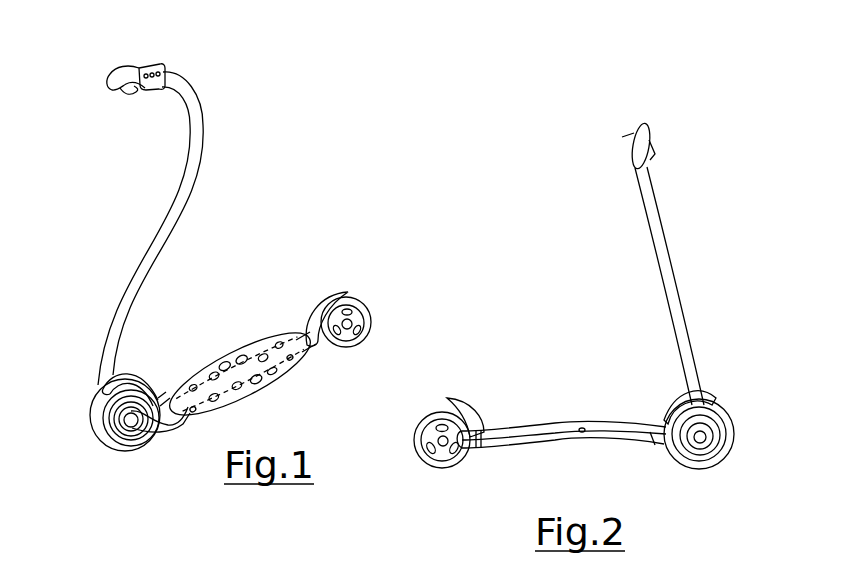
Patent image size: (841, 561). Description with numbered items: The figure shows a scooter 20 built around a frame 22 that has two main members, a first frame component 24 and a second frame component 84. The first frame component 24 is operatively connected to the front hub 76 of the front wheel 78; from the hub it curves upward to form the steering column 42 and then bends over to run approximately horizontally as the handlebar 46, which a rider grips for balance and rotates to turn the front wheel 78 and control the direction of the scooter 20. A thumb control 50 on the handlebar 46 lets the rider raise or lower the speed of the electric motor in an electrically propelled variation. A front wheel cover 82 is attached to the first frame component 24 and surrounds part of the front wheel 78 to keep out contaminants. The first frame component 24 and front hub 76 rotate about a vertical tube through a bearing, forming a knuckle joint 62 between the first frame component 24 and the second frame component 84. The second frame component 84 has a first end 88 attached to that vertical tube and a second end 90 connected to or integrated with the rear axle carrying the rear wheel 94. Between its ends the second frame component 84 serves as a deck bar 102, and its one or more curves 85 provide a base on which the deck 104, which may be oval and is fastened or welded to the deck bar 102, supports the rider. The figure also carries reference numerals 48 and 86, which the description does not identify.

In FIG. 1, the scooter 20 is at (280, 77).
In FIG. 2, the scooter 20 is at (701, 155).
In FIG. 1, the frame 22 is at (201, 228).
In FIG. 2, the frame 22 is at (679, 286).
In FIG. 1, the first frame component 24 is at (150, 228).
In FIG. 2, the first frame component 24 is at (666, 286).
In FIG. 1, the steering column 42 is at (178, 203).
In FIG. 2, the steering column 42 is at (666, 275).
In FIG. 1, the handlebar 46 is at (166, 86).
In FIG. 2, the handlebar 46 is at (636, 150).
In FIG. 1, the handlebar clamp 48 is at (147, 66).
In FIG. 1, the thumb control 50 is at (134, 94).
In FIG. 1, the knuckle joint 62 is at (133, 422).
In FIG. 1, the front hub 76 is at (81, 442).
In FIG. 2, the front hub 76 is at (705, 441).
In FIG. 1, the front wheel 78 is at (90, 411).
In FIG. 2, the front wheel 78 is at (737, 432).
In FIG. 1, the front wheel cover 82 is at (128, 375).
In FIG. 1, the second frame component 84 is at (161, 385).
In FIG. 2, the second frame component 84 is at (479, 450).
In FIG. 1, the curves 85 is at (205, 346).
In FIG. 1, the fork 86 is at (168, 454).
In FIG. 1, the first end 88 is at (159, 439).
In FIG. 2, the first end 88 is at (651, 450).
In FIG. 1, the second end 90 is at (304, 313).
In FIG. 2, the second end 90 is at (494, 452).
In FIG. 1, the rear wheel 94 is at (364, 296).
In FIG. 2, the rear wheel 94 is at (431, 407).
In FIG. 1, the deck bar 102 is at (292, 333).
In FIG. 2, the deck bar 102 is at (582, 434).
In FIG. 1, the deck 104 is at (256, 364).
In FIG. 2, the deck 104 is at (568, 421).